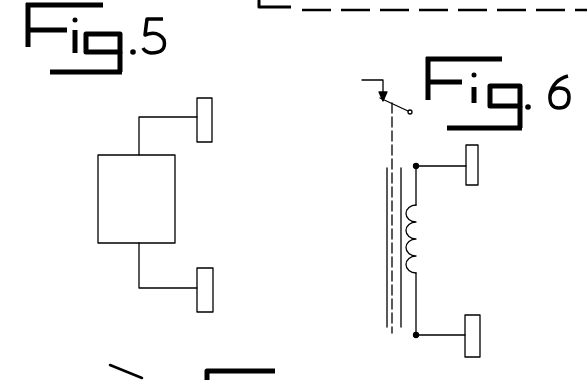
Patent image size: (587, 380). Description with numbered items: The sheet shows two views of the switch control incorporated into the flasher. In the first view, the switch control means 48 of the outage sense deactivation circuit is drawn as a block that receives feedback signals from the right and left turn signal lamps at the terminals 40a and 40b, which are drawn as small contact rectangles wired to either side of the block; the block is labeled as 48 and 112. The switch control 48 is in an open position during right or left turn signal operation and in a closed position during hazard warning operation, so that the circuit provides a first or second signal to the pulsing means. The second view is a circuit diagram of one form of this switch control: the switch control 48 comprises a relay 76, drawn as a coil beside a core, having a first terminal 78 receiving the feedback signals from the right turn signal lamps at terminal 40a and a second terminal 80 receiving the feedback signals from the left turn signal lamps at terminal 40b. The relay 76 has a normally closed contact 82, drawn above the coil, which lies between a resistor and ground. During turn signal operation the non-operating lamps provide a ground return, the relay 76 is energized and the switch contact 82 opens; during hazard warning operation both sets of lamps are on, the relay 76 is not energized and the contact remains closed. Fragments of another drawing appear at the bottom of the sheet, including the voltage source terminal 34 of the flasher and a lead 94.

In FIG. 5, the terminal 40a is at (213, 110).
In FIG. 6, the terminal 40a is at (479, 164).
In FIG. 5, the terminal 40b is at (215, 290).
In FIG. 6, the terminal 40b is at (480, 328).
In FIG. 5, the switch control means 48 is at (201, 199).
In FIG. 5, the switch control 112 is at (201, 199).
In FIG. 6, the relay 76 is at (417, 242).
In FIG. 6, the first terminal 78 is at (423, 170).
In FIG. 6, the second terminal 80 is at (418, 333).
In FIG. 6, the normally closed contact 82 is at (380, 107).
In FIG. 5, the lead 94 is at (110, 365).
In FIG. 5, the voltage source terminal 34 is at (178, 379).